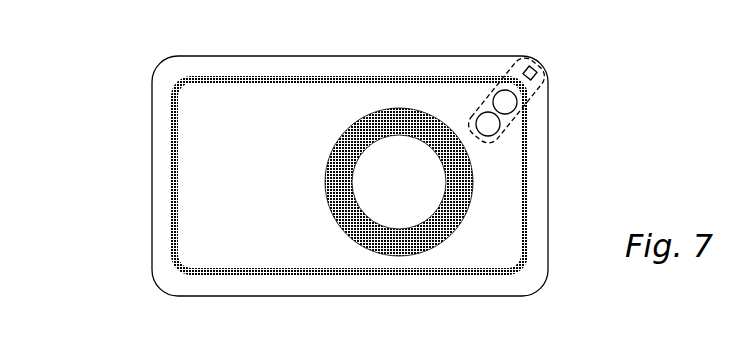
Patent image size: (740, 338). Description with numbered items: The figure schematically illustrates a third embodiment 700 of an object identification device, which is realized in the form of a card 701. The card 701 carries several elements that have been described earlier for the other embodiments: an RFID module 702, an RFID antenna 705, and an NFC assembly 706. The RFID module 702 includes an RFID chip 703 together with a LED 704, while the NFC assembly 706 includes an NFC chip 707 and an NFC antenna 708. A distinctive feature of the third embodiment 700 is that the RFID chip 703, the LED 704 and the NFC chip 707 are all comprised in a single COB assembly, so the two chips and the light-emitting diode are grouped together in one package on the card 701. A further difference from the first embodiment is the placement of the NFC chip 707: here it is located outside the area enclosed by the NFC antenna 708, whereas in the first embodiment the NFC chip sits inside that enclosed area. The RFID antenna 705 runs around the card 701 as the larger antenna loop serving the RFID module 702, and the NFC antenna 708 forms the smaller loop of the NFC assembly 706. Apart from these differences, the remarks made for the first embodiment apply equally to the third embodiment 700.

The third embodiment of object identification device 700 is at (60, 47).
The card 701 is at (152, 163).
The RFID module 702 is at (504, 70).
The RFID chip 703 is at (506, 102).
The LED 704 is at (533, 97).
The RFID antenna 705 is at (528, 206).
The NFC assembly 706 is at (493, 190).
The NFC chip 707 is at (490, 124).
The NFC antenna 708 is at (430, 251).